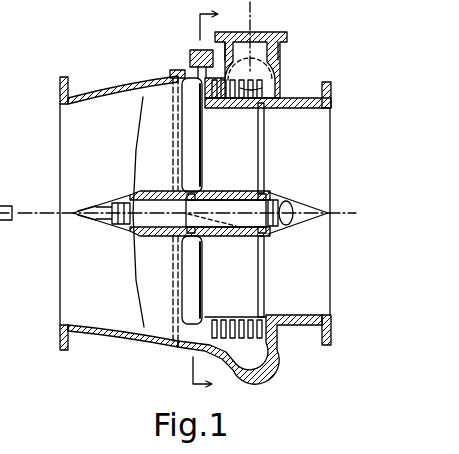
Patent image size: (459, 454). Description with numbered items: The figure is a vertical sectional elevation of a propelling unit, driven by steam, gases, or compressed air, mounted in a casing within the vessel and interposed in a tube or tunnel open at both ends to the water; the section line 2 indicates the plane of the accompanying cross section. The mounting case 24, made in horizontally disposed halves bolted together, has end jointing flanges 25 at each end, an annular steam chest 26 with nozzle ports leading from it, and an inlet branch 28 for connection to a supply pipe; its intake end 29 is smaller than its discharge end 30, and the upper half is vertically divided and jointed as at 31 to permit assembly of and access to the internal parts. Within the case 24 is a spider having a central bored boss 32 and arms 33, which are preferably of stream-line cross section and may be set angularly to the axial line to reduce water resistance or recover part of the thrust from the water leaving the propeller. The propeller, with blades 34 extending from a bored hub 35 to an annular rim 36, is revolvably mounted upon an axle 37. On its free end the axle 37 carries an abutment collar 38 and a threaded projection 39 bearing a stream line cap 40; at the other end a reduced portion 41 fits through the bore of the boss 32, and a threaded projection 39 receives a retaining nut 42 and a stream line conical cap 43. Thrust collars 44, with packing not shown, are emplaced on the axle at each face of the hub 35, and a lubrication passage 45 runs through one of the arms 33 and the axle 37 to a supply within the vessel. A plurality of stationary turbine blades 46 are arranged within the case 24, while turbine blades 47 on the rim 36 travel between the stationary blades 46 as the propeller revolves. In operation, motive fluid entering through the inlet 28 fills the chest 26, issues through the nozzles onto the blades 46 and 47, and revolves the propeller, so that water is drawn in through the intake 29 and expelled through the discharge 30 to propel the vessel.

The section line 2- 2 is at (195, 199).
The mounting case 24 is at (101, 97).
The end jointing flanges 25 is at (66, 78).
The annular steam chest 26 is at (268, 78).
The inlet branch 28 is at (258, 45).
The intake end 29 is at (320, 142).
The discharge end 30 is at (82, 117).
The vertical joint 31 is at (193, 68).
The central bored boss 32 is at (137, 230).
The arms 33 is at (157, 270).
The blades 34 is at (212, 201).
The bored hub 35 is at (200, 201).
The annular rim 36 is at (235, 106).
The axle 37 is at (263, 190).
The abutment collar 38 is at (269, 230).
The threaded projection 39 is at (103, 208).
The stream line cap 40 is at (308, 215).
The reduced portion 41 is at (163, 210).
The retaining nut 42 is at (119, 200).
The stream line conical cap 43 is at (80, 220).
The thrust collars 44 is at (193, 229).
The lubrication passage 45 is at (175, 100).
The stationary turbine blades 46 is at (252, 80).
The turbine blades 47 is at (215, 88).